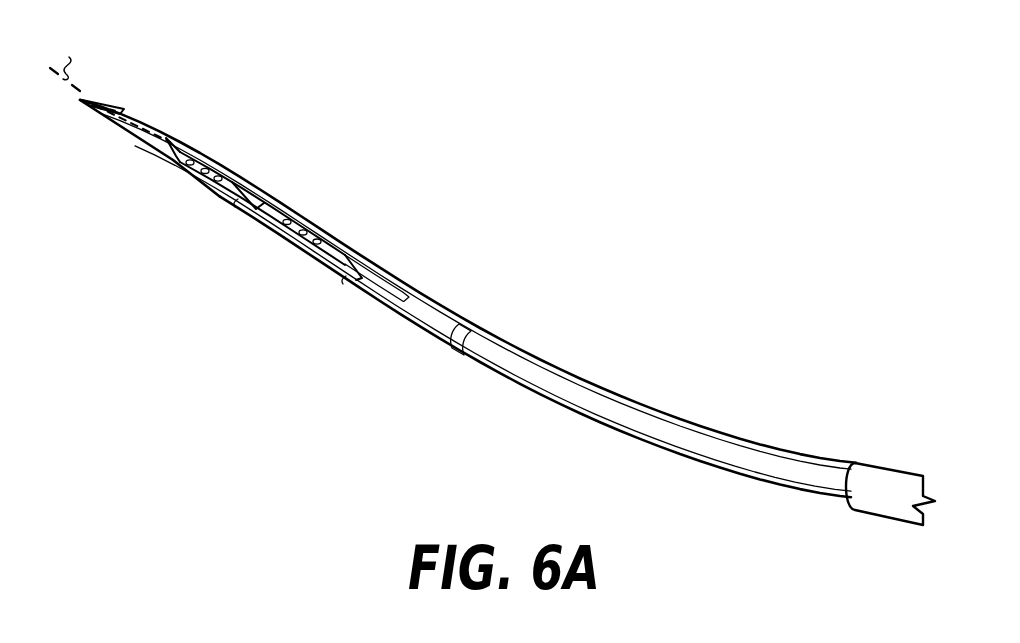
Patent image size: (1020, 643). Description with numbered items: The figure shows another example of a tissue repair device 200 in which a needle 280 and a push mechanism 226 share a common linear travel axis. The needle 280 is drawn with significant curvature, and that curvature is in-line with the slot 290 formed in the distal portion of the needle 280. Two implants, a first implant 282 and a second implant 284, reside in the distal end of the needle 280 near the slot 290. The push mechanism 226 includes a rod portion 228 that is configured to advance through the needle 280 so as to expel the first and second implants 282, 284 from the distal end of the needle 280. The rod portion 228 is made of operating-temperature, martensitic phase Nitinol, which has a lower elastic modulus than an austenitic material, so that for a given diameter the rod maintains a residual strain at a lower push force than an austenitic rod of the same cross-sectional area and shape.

The tissue repair device 200 is at (797, 201).
The push mechanism 226 is at (743, 457).
The rod portion 228 is at (593, 400).
The needle 280 is at (143, 140).
The first implant 282 is at (217, 160).
The second implant 284 is at (287, 237).
The slot 290 is at (122, 110).